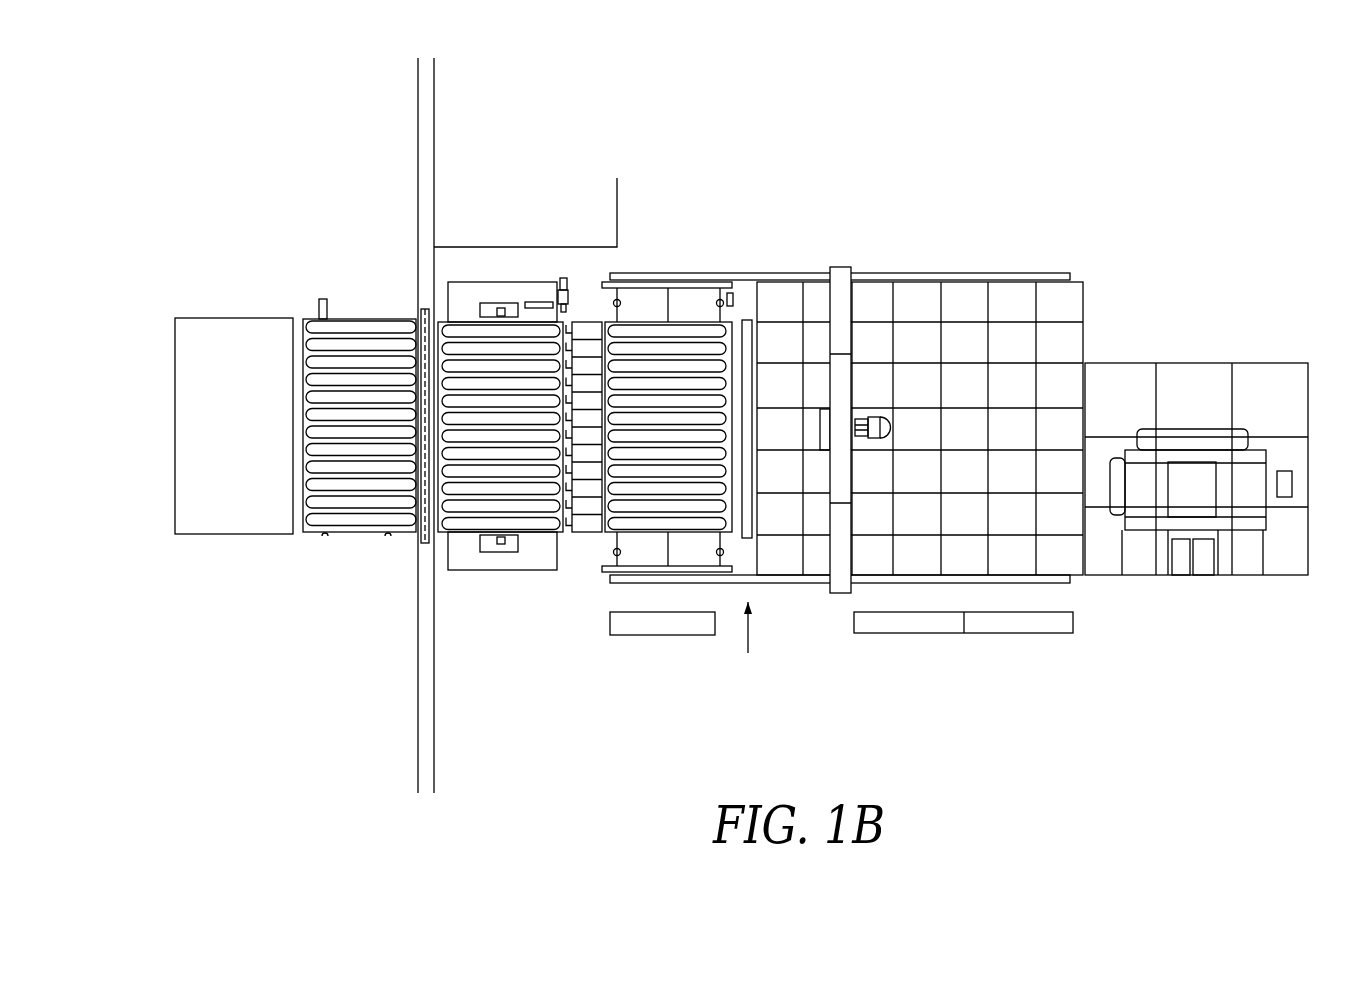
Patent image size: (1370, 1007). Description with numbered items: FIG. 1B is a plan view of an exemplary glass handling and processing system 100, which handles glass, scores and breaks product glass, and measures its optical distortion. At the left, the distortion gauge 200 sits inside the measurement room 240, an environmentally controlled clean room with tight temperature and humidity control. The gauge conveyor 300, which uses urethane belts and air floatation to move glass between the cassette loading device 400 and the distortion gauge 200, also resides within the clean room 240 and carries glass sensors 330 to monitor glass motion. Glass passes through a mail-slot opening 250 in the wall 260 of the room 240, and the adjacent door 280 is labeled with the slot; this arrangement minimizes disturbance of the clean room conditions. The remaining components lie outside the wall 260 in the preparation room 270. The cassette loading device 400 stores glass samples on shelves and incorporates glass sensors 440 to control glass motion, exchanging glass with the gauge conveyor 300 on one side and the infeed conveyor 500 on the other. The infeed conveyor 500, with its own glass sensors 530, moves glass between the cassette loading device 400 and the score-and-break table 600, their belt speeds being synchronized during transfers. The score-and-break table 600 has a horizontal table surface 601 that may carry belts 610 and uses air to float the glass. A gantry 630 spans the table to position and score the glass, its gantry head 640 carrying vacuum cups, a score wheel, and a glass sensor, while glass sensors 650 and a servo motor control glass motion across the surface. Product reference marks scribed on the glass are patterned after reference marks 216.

The system 100 is at (1175, 77).
The distortion gauge 200 is at (215, 545).
The reference marks 216 is at (950, 485).
The measurement room 240 is at (418, 109).
The mail-slot opening 250 is at (415, 545).
The wall 260 is at (437, 122).
The preparation room 270 is at (434, 64).
The door 280 is at (341, 478).
The gauge conveyor 300 is at (364, 312).
The glass sensors 330 is at (296, 316).
The cassette loading device 400 is at (503, 590).
The glass sensors 440 is at (563, 272).
The infeed conveyor 500 is at (681, 318).
The glass sensors 530 is at (731, 291).
The score-and-break table 600 is at (1000, 272).
The horizontal table surface 601 is at (1075, 578).
The belt mechanism 610 is at (755, 274).
The gantry 630 is at (848, 312).
The gantry head 640 is at (903, 421).
The glass sensors 650 is at (1121, 347).